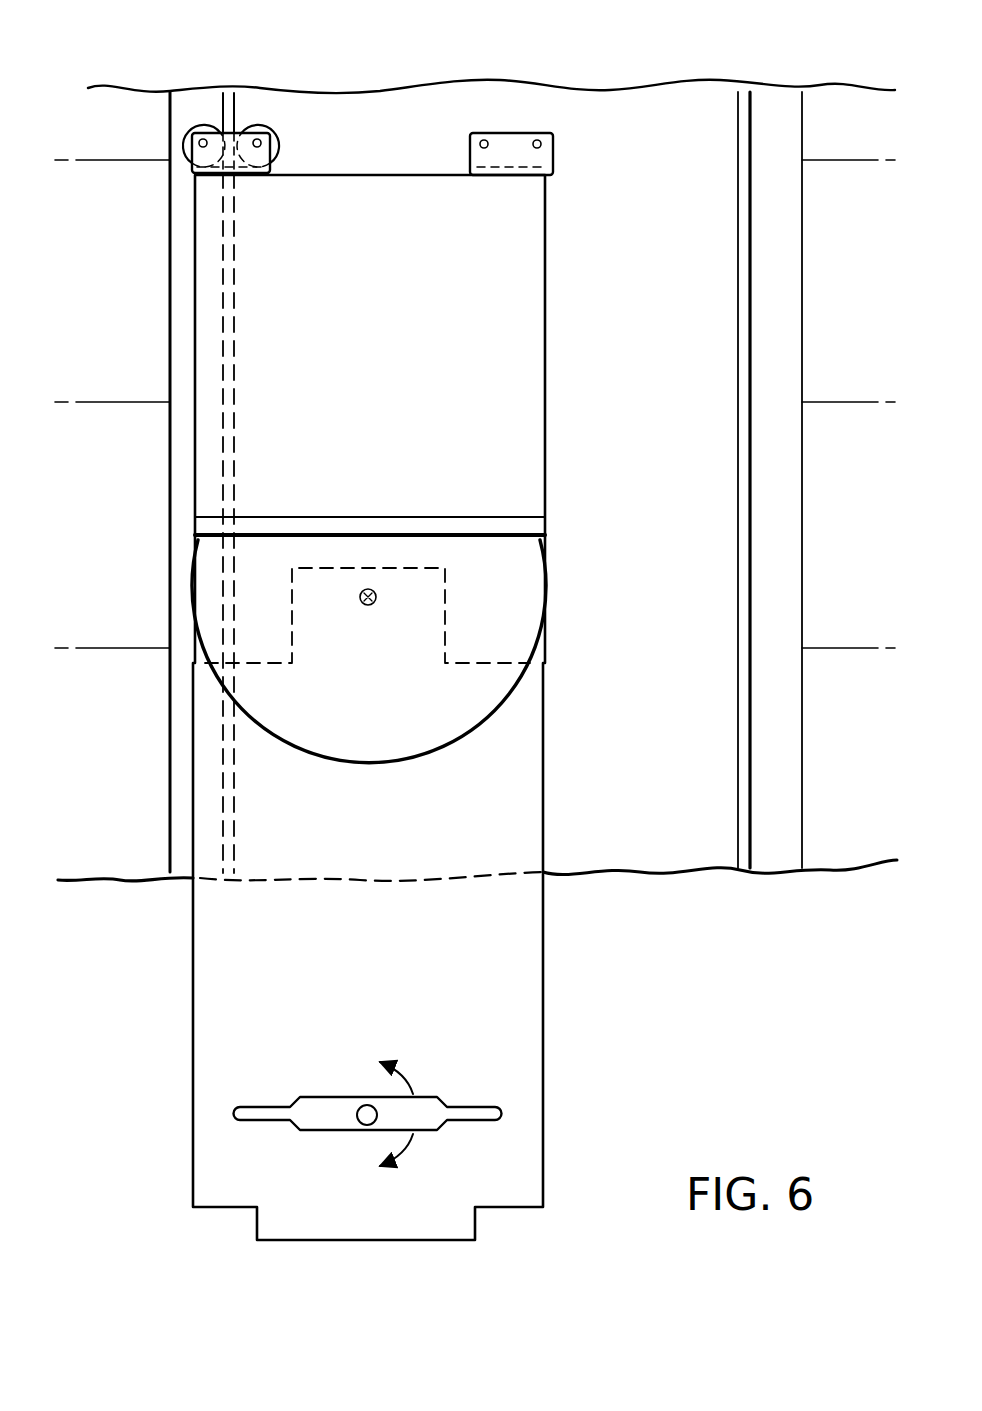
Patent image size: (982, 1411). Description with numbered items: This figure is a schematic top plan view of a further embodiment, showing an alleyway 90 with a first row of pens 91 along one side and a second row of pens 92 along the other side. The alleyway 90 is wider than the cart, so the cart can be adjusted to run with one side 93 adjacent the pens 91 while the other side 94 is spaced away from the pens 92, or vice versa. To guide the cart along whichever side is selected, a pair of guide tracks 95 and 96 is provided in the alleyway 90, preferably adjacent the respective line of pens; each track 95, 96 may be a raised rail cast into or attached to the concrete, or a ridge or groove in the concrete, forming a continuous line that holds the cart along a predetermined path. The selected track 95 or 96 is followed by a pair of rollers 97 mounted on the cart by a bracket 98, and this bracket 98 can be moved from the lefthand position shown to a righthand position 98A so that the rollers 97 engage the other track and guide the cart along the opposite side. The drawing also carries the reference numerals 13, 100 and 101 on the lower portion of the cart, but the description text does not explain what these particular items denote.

The pivot pin / key hole location 13 is at (368, 606).
The alleyway 90 is at (645, 93).
The first row of pens 91 is at (122, 76).
The second row of pens 92 is at (848, 86).
The one side of the cart 93 is at (193, 437).
The other side of the cart 94 is at (545, 390).
The guide track 95 is at (236, 126).
The guide track 96 is at (736, 197).
The rollers 97 is at (285, 130).
The bracket 98 is at (262, 152).
The righthand position of bracket 98A is at (508, 143).
The latch bar 100 is at (289, 1101).
The latch pivot 101 is at (363, 1120).